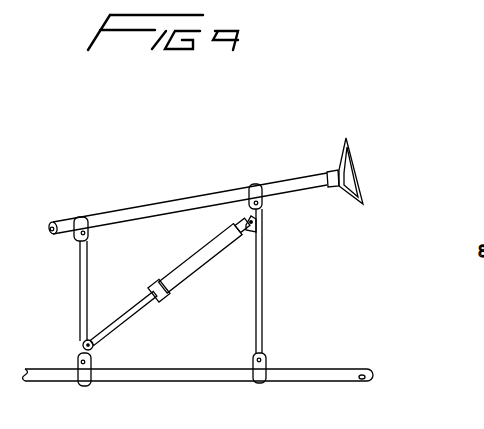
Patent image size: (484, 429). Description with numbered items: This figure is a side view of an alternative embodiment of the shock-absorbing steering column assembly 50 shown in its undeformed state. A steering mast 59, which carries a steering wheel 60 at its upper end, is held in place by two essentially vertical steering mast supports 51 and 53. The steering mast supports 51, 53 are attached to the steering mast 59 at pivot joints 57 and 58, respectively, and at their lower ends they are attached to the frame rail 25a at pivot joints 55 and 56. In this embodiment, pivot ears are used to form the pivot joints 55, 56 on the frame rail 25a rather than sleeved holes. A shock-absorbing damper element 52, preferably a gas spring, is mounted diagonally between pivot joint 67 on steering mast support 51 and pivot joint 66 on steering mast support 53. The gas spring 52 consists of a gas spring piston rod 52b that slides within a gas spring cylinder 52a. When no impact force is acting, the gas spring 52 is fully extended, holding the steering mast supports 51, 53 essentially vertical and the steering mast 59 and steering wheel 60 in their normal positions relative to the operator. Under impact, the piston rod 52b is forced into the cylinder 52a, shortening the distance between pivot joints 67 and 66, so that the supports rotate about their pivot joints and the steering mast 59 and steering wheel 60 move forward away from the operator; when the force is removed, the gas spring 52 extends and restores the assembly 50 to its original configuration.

The shock-absorbing steering column assembly 50 is at (210, 156).
The steering mast support 51 is at (262, 322).
The shock-absorbing damper element 52 is at (170, 290).
The gas spring cylinder 52a is at (180, 282).
The gas spring piston rod 52b is at (118, 326).
The steering mast support 53 is at (80, 315).
The pivot joint 55 is at (260, 366).
The pivot joint 56 is at (83, 366).
The pivot joint 57 is at (254, 184).
The pivot joint 58 is at (80, 217).
The steering mast 59 is at (310, 182).
The steering wheel 60 is at (363, 190).
The pivot joint 66 is at (83, 347).
The pivot joint 67 is at (257, 228).
The frame rail 25a is at (178, 375).